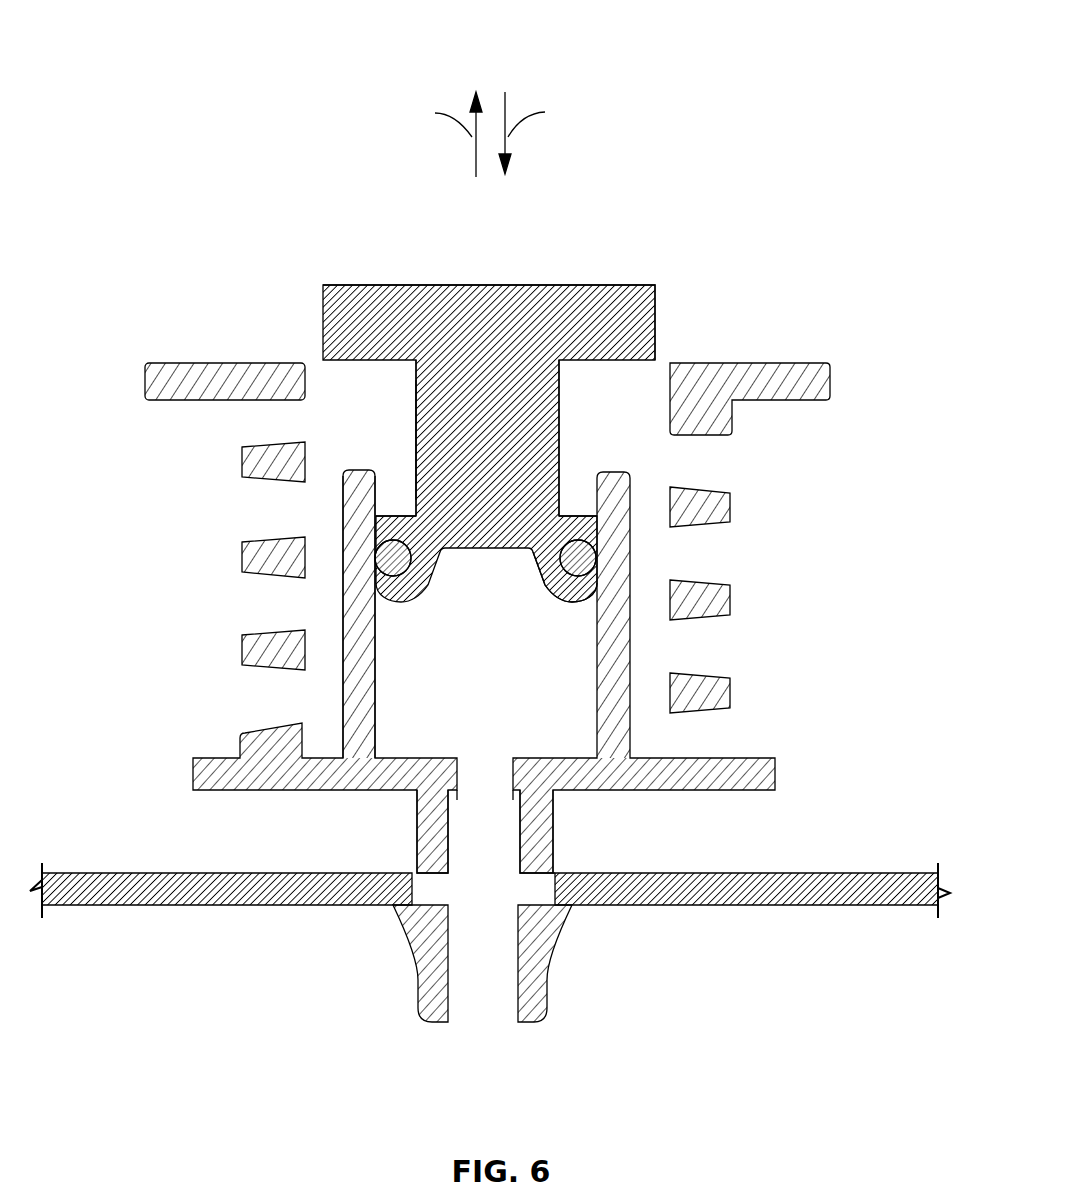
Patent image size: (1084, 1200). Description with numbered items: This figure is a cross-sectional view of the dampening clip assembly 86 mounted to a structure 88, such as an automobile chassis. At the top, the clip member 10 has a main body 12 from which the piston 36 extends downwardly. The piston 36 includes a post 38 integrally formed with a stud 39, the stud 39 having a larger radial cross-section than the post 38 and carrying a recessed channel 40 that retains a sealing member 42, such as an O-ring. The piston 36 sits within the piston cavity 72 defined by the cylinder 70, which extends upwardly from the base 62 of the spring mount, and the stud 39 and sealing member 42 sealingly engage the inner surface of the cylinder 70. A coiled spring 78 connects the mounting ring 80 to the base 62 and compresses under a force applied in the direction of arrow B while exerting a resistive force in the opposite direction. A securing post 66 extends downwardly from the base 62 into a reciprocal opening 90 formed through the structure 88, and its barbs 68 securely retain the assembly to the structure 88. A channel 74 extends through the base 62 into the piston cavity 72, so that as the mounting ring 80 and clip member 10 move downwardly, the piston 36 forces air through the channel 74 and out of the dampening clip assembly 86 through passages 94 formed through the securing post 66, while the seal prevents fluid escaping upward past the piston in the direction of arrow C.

The dampening clip assembly 86 is at (232, 50).
The clip member 10 is at (388, 283).
The main body 12 is at (626, 293).
The piston 36 is at (417, 418).
The post 38 is at (487, 378).
The stud 39 is at (403, 513).
The recessed channel 40 is at (568, 603).
The sealing member 42 is at (597, 545).
The mounting ring 80 is at (820, 387).
The coiled spring 78 is at (258, 562).
The cylinder 70 is at (630, 668).
The piston cavity 72 is at (393, 655).
The channel 74 is at (488, 763).
The base 62 is at (200, 773).
The securing post 66 is at (430, 835).
The passages 94 is at (493, 848).
The reciprocal opening 90 is at (540, 898).
The barbs 68 is at (397, 918).
The structure 88 is at (755, 907).